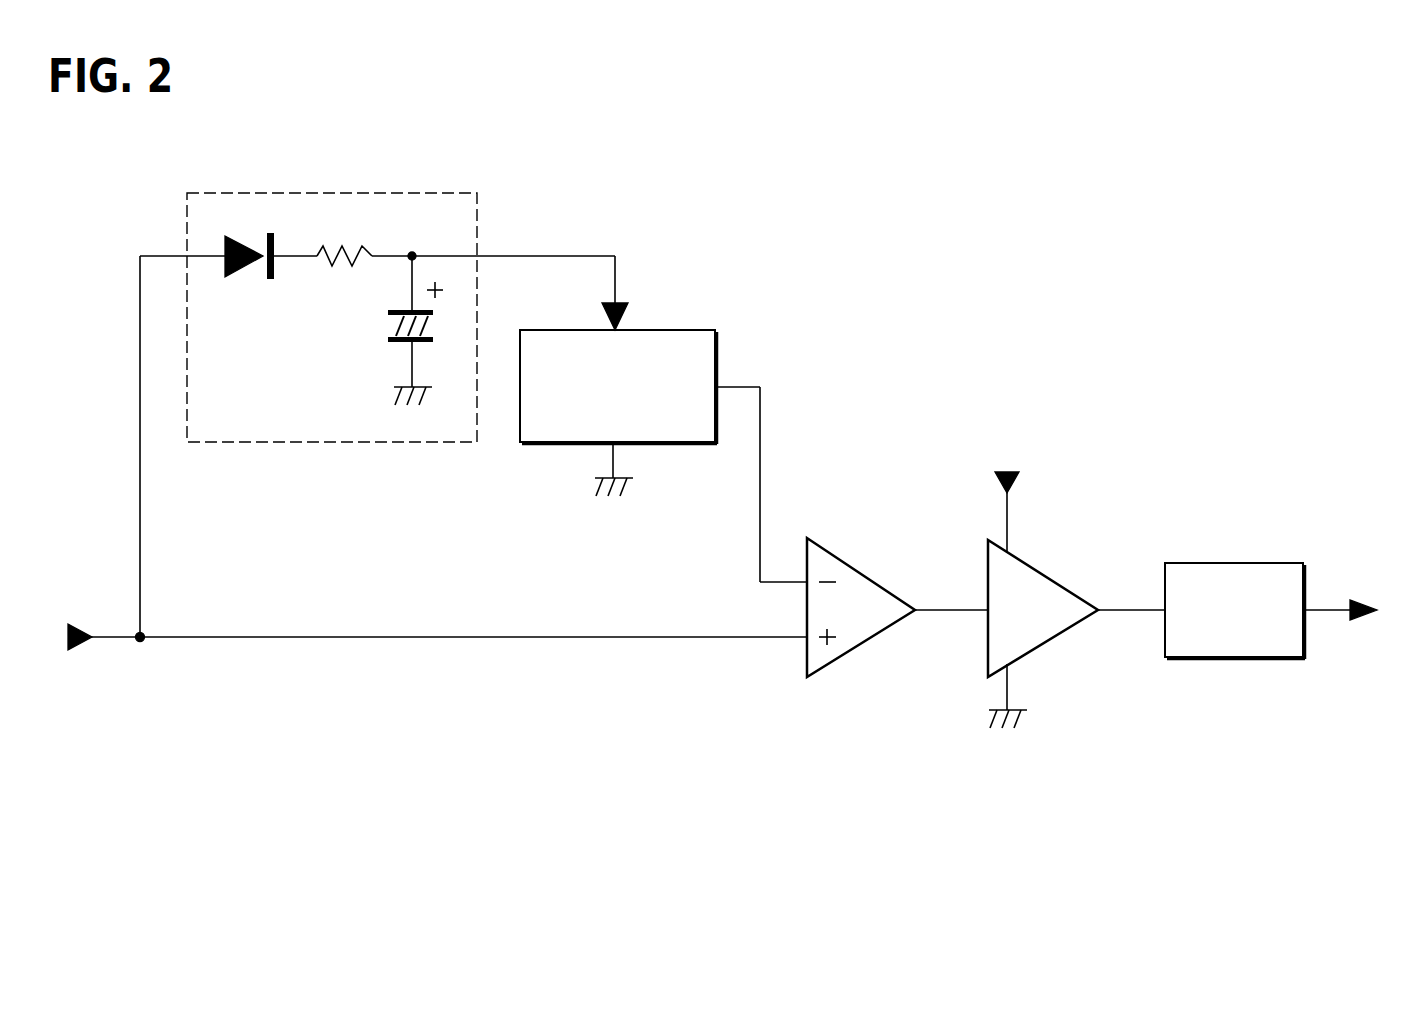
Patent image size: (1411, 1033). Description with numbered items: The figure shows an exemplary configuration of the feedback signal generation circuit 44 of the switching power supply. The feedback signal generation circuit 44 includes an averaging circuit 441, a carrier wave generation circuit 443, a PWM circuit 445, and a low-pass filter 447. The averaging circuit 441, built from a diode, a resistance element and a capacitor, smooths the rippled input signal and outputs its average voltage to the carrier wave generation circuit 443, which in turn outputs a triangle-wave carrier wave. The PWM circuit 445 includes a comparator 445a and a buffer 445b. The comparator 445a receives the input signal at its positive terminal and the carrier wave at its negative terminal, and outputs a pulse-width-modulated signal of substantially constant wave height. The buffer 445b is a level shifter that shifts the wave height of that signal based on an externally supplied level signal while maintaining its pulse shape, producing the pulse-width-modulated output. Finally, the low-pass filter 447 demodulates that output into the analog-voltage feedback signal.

The feedback signal generation circuit 44 is at (1252, 174).
The averaging circuit 441 is at (350, 175).
The carrier wave generation circuit 443 is at (638, 335).
The PWM circuit 445 is at (1102, 747).
The comparator 445a is at (903, 548).
The buffer 445b is at (1090, 548).
The low-pass filter 447 is at (1215, 568).